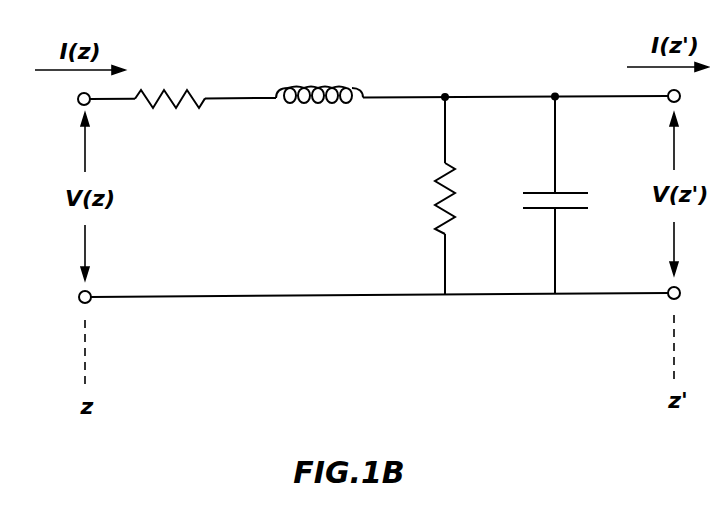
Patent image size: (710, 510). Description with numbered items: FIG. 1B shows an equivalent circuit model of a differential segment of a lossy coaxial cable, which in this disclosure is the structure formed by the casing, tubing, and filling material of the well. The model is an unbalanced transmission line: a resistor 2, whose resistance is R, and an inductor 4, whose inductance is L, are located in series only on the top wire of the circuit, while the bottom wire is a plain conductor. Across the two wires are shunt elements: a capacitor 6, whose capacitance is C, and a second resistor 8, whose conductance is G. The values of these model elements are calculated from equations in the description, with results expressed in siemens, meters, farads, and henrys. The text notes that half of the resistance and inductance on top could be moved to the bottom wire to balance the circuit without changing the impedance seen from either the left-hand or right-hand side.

The resistor 2 is at (170, 106).
The inductor 4 is at (318, 104).
The capacitor 6 is at (543, 211).
The second resistor 8 is at (447, 165).